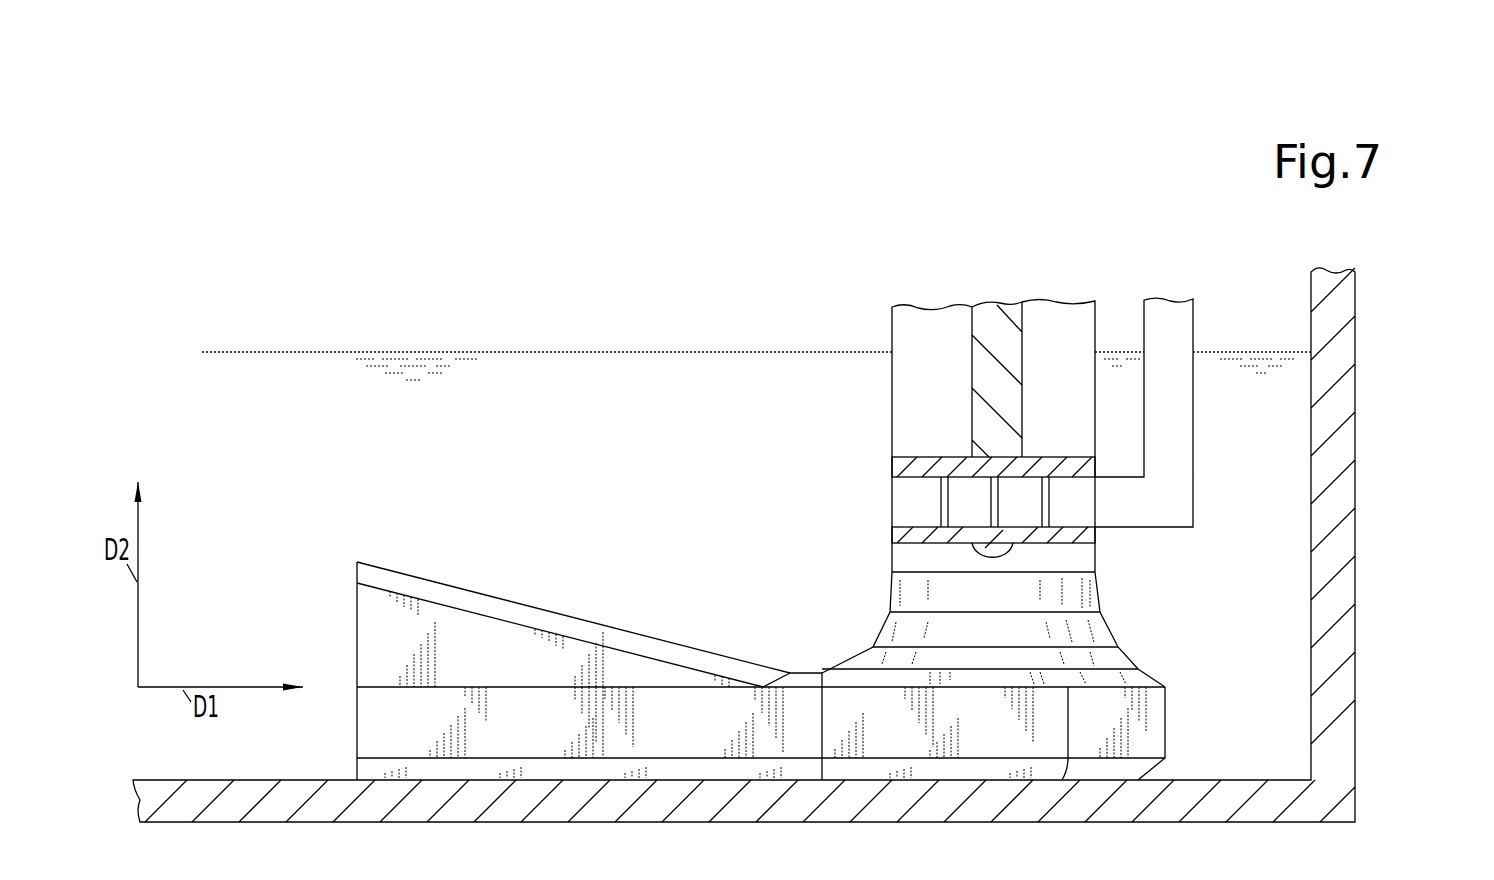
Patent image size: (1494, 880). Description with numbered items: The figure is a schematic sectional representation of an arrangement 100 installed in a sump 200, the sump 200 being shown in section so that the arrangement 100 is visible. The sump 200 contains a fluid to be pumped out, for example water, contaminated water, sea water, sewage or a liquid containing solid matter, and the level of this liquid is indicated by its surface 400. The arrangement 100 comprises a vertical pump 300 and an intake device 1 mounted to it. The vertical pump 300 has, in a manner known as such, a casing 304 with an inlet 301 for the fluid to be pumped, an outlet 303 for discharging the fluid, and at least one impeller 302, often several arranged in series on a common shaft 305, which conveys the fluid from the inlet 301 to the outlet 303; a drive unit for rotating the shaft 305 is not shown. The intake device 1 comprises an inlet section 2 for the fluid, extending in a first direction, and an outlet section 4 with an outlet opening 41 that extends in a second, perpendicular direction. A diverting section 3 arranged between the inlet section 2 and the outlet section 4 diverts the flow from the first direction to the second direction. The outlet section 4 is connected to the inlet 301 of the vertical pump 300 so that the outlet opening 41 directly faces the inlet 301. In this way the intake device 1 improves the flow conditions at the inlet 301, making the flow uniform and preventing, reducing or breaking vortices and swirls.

The intake device 1 is at (693, 576).
The inlet section 2 is at (502, 600).
The diverting section 3 is at (1170, 718).
The outlet section 4 is at (1118, 625).
The outlet opening 41 is at (925, 570).
The arrangement 100 is at (748, 320).
The sump 200 is at (1358, 663).
The vertical pump 300 is at (890, 377).
The inlet 301 is at (1080, 572).
The impeller 302 is at (890, 467).
The outlet 303 is at (1195, 462).
The casing 304 is at (892, 425).
The shaft 305 is at (1022, 353).
The surface 400 is at (368, 351).